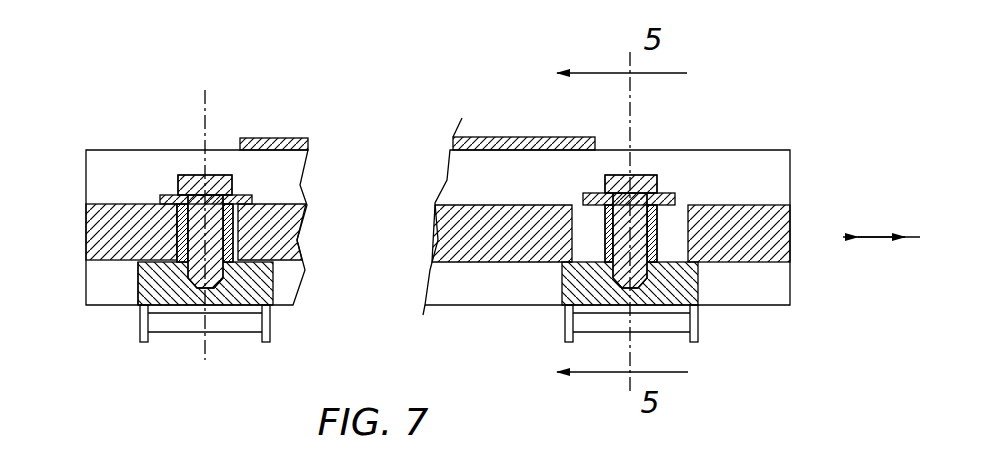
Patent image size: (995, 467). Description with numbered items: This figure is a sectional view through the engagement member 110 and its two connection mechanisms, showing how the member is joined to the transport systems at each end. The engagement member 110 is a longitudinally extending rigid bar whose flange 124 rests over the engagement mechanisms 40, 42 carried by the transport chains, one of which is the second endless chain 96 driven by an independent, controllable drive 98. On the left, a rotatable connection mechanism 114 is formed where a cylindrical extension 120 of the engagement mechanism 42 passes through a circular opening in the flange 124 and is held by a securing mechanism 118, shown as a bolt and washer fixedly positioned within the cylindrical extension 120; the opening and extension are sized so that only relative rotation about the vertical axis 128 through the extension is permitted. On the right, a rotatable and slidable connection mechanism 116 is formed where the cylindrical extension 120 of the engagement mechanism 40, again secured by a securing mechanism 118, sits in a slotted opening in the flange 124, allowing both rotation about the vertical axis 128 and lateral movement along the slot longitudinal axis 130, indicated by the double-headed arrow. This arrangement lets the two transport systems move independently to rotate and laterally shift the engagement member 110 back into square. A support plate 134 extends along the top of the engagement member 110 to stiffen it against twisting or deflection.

The engagement mechanism 40 is at (690, 292).
The engagement mechanism 42 is at (278, 307).
The second endless chain 96 is at (140, 332).
The drive 98 is at (567, 323).
The engagement member 110 is at (150, 157).
The rotatable connection mechanism 114 is at (128, 268).
The rotatable and slidable connection mechanism 116 is at (692, 193).
The securing mechanism 118 is at (190, 173).
The cylindrical extension 120 is at (230, 232).
The flange 124 is at (92, 219).
The vertical axis 128 is at (206, 346).
The slot longitudinal axis 130 is at (880, 240).
The support plate 134 is at (267, 137).